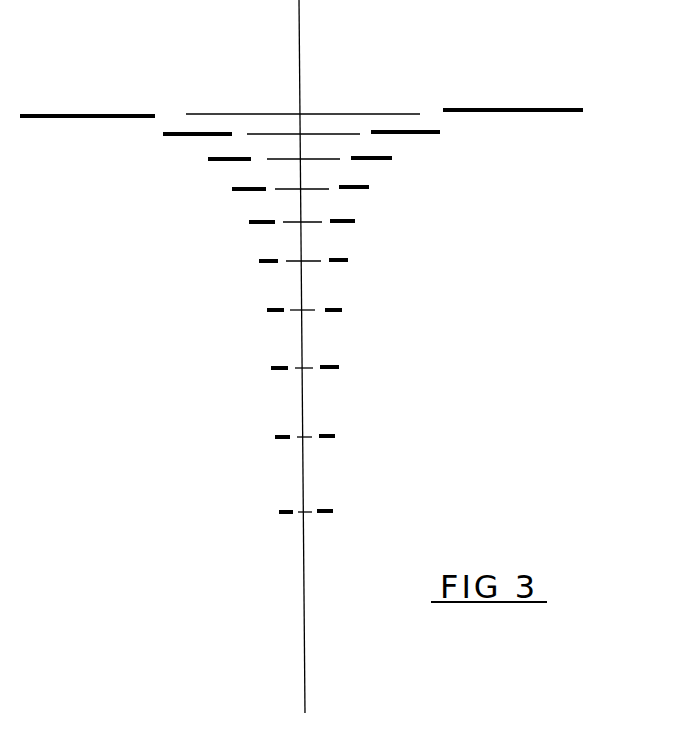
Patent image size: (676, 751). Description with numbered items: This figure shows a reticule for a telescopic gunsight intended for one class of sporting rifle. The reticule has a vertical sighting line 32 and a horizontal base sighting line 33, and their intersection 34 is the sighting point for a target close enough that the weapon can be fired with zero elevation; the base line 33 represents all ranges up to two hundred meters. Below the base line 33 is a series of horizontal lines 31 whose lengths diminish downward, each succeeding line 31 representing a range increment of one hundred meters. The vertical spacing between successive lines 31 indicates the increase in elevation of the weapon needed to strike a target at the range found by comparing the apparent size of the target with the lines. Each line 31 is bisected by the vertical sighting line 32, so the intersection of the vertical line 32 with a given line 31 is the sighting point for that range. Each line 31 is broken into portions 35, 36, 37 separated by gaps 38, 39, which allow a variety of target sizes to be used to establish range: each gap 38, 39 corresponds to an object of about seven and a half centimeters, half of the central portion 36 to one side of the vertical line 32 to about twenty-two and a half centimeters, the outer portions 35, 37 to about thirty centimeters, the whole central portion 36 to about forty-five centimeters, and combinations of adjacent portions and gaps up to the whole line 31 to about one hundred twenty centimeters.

The lines 31 is at (387, 214).
The vertical sighting line 32 is at (300, 37).
The horizontal base sighting line 33 is at (397, 113).
The intersection 34 is at (298, 114).
The portion of line 35 is at (273, 312).
The portion of line 36 is at (300, 313).
The portion of line 37 is at (336, 312).
The gap 38 is at (287, 306).
The gap 39 is at (318, 306).